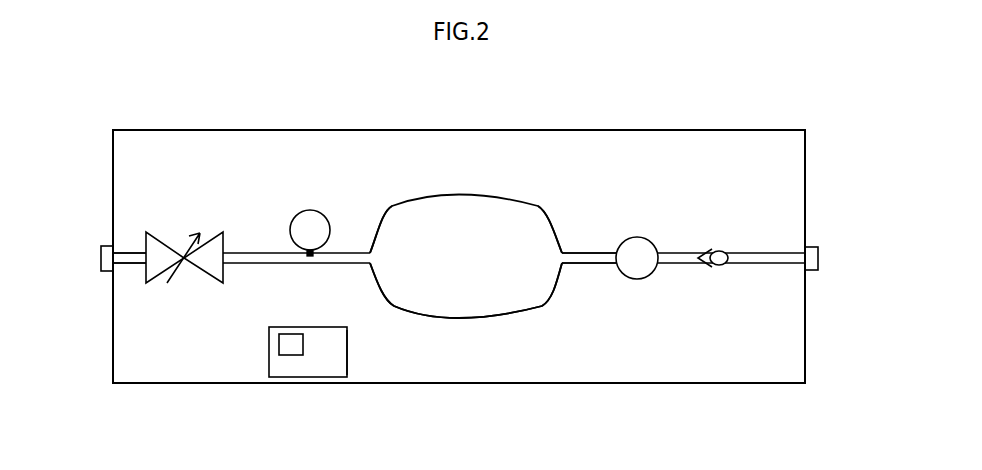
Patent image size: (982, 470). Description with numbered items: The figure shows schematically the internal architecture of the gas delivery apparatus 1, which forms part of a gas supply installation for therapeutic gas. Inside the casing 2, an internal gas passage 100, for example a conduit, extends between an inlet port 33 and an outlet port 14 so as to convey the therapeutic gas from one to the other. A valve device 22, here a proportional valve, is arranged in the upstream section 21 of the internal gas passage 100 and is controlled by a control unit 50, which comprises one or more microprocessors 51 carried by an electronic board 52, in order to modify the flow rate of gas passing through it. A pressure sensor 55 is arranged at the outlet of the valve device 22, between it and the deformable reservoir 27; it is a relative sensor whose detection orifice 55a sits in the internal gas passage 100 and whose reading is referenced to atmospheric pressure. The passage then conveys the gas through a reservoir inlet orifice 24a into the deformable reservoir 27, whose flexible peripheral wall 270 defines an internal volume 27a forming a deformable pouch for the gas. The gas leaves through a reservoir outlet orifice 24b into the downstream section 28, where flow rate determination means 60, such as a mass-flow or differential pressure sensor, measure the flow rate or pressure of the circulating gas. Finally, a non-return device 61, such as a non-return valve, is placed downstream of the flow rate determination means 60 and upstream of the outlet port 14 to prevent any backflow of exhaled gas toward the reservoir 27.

The gas delivery apparatus 1 is at (411, 128).
The casing 2 is at (165, 384).
The outlet port 14 is at (820, 243).
The upstream section 21 is at (135, 253).
The valve device 22 is at (207, 230).
The reservoir inlet orifice 24a is at (370, 250).
The reservoir outlet orifice 24b is at (556, 268).
The deformable reservoir 27 is at (503, 320).
The internal volume 27a is at (455, 278).
The flexible peripheral wall 270 is at (421, 318).
The downstream section 28 is at (587, 250).
The inlet port 33 is at (101, 244).
The control unit 50 is at (289, 366).
The microprocessor 51 is at (289, 342).
The electronic board 52 is at (337, 344).
The pressure sensor 55 is at (293, 212).
The detection orifice 55a is at (312, 257).
The flow rate determination means 60 is at (631, 280).
The non-return device 61 is at (718, 268).
The internal gas passage 100 is at (128, 265).